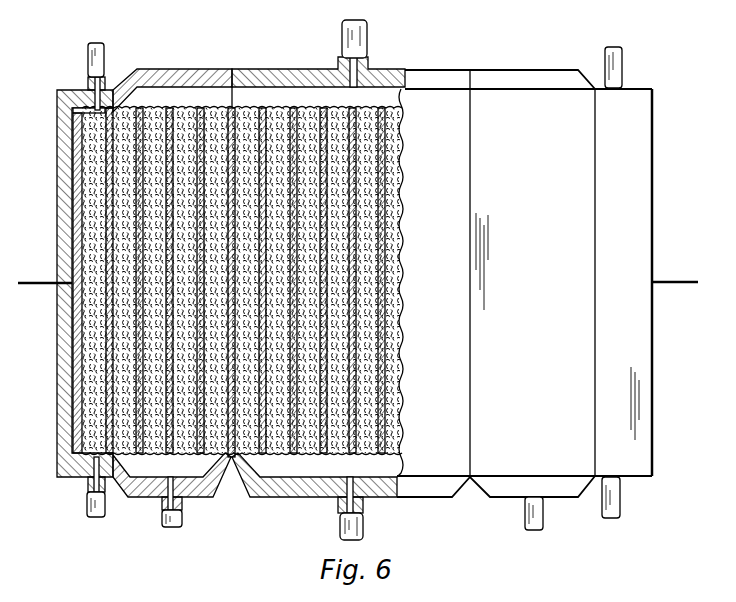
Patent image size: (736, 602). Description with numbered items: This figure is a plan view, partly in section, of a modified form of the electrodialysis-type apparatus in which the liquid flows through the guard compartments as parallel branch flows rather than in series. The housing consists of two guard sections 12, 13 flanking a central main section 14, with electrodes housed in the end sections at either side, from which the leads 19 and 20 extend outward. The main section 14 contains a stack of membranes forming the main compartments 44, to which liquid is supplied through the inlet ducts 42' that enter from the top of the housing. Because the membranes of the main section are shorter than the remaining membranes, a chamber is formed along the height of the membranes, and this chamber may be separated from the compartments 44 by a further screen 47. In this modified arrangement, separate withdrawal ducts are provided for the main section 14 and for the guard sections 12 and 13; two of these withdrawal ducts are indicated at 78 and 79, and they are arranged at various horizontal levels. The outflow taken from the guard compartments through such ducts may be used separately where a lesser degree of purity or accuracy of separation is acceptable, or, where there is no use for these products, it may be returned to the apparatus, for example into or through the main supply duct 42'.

The guard section 12 is at (173, 73).
The main section 14 is at (277, 73).
The inlet duct 42' is at (379, 53).
The guard section 13 is at (503, 75).
The lead 19 is at (40, 282).
The lead 20 is at (673, 281).
The screen 47 is at (178, 460).
The compartments 44 is at (335, 437).
The withdrawal duct 78 is at (162, 517).
The withdrawal duct 79 is at (535, 508).